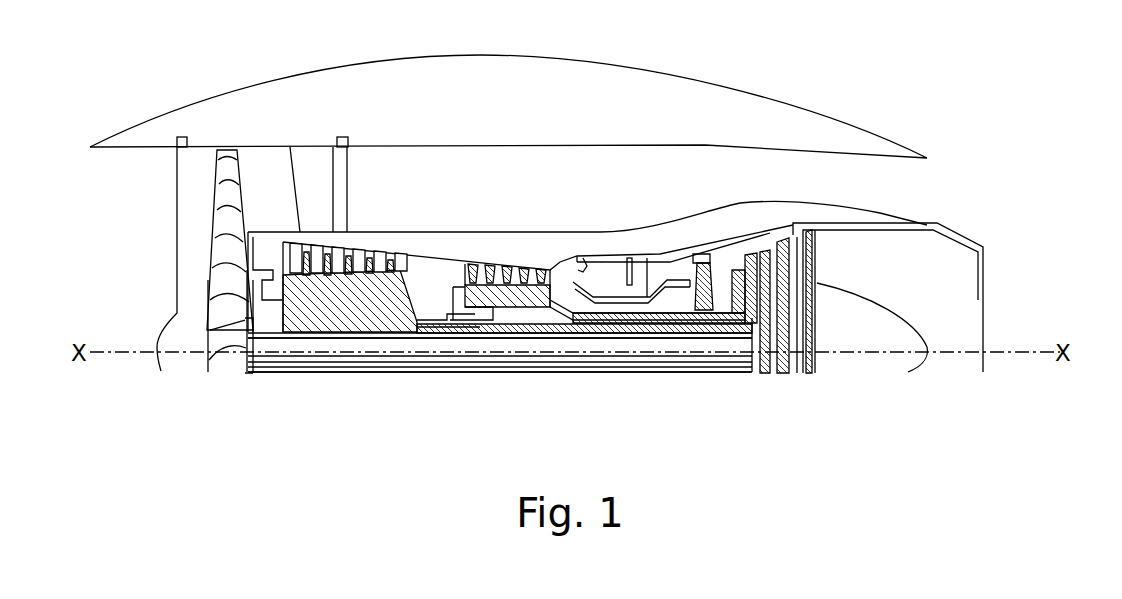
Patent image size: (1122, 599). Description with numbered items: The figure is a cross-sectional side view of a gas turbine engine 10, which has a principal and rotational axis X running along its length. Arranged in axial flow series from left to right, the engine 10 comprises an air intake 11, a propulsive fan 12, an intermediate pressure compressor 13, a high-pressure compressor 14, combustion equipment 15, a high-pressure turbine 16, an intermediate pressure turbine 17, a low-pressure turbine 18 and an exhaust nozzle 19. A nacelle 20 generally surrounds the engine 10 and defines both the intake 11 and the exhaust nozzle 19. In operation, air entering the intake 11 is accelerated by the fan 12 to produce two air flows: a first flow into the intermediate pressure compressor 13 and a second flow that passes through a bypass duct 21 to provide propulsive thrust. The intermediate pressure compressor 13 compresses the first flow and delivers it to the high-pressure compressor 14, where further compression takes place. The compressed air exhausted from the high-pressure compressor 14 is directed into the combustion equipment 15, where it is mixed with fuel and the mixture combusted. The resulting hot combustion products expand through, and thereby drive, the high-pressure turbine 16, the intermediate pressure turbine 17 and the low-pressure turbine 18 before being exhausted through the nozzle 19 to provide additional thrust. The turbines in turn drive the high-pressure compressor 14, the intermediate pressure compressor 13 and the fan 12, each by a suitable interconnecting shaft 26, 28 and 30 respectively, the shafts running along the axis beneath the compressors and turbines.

The gas turbine engine 10 is at (481, 160).
The air intake 11 is at (136, 243).
The propulsive fan 12 is at (227, 177).
The intermediate pressure compressor 13 is at (347, 293).
The high-pressure compressor 14 is at (510, 267).
The combustion equipment 15 is at (638, 241).
The high-pressure turbine 16 is at (700, 270).
The intermediate pressure turbine 17 is at (737, 258).
The low-pressure turbine 18 is at (787, 255).
The exhaust nozzle 19 is at (967, 298).
The nacelle 20 is at (622, 87).
The bypass duct 21 is at (272, 165).
The interconnecting shaft 26 is at (688, 315).
The interconnecting shaft 28 is at (465, 324).
The interconnecting shaft 30 is at (367, 372).